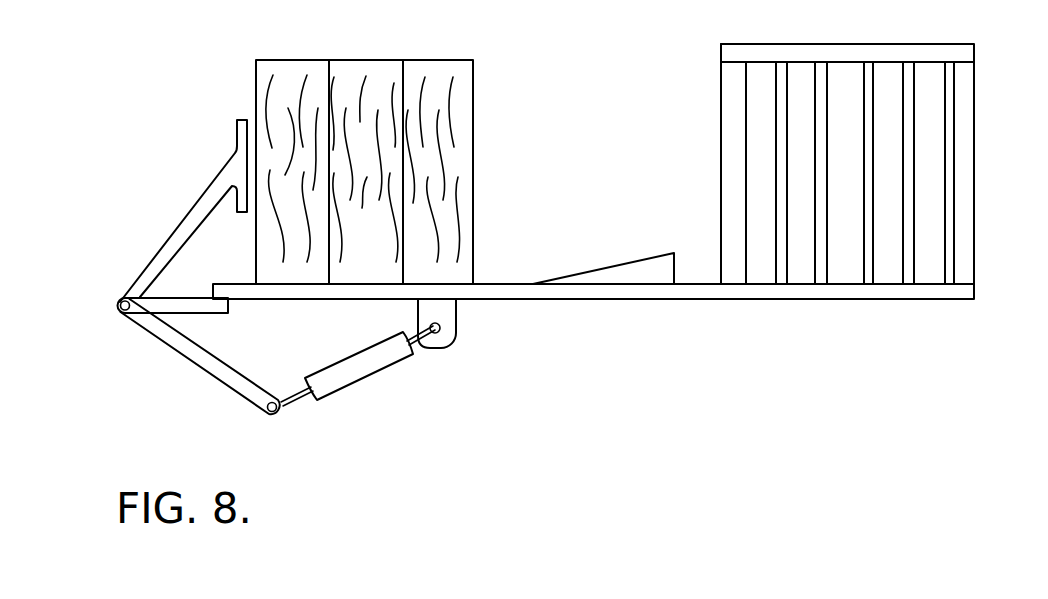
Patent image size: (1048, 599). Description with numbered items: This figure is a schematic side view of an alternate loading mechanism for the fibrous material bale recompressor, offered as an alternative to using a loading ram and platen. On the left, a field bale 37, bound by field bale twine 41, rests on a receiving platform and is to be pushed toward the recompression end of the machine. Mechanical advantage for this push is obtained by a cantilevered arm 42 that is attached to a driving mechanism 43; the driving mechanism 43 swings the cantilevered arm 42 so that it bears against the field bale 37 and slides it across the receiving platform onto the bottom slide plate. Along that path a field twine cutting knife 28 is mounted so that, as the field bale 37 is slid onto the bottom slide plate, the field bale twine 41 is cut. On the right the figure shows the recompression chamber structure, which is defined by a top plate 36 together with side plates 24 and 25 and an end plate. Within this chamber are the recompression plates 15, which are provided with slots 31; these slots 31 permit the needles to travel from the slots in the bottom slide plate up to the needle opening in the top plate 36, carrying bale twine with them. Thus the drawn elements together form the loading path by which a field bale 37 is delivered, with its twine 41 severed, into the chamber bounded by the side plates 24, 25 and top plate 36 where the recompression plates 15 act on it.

The recompression plates 15 is at (855, 161).
The side plate 24 is at (962, 150).
The side plate 25 is at (730, 145).
The field twine cutting knife 28 is at (619, 276).
The slots 31 is at (824, 229).
The top plate 36 is at (886, 57).
The field bale 37 is at (379, 153).
The field bale twine 41 is at (400, 233).
The cantilevered arm 42 is at (185, 231).
The driving mechanism 43 is at (348, 375).